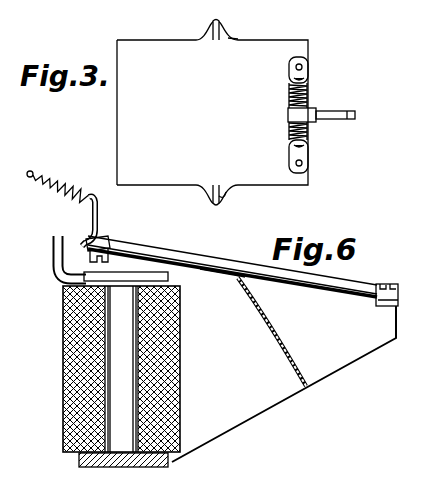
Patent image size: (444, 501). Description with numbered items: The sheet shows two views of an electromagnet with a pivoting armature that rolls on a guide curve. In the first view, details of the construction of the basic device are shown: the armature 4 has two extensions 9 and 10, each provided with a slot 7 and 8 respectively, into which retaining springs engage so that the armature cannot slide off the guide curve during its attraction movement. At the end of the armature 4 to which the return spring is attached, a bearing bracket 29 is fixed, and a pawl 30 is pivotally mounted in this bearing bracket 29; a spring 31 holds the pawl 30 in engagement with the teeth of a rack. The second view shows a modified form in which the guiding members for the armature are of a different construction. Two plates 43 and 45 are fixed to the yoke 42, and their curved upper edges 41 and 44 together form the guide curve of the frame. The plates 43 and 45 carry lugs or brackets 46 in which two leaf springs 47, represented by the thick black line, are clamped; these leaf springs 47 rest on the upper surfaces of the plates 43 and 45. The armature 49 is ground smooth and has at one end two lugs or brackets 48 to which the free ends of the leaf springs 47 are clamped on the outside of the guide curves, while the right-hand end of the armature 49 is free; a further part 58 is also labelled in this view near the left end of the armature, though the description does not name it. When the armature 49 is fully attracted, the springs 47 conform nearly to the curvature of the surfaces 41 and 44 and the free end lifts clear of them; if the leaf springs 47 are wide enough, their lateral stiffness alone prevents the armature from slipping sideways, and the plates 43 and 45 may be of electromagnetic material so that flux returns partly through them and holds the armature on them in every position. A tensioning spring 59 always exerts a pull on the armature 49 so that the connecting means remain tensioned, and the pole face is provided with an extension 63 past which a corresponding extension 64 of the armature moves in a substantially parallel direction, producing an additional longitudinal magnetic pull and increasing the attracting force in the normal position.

In FIG. 3, the armature 4 is at (126, 113).
In FIG. 3, the slot 7 is at (214, 21).
In FIG. 3, the slot 8 is at (223, 205).
In FIG. 3, the extension 9 is at (228, 37).
In FIG. 3, the extension 10 is at (206, 190).
In FIG. 3, the bearing bracket 29 is at (308, 66).
In FIG. 3, the pawl 30 is at (326, 114).
In FIG. 3, the spring 31 is at (308, 139).
In FIG. 6, the curved upper edge 41 is at (203, 273).
In FIG. 6, the yoke 42 is at (167, 462).
In FIG. 6, the plate 43 is at (283, 390).
In FIG. 6, the curved upper edge 44 is at (258, 281).
In FIG. 6, the plate 45 is at (364, 349).
In FIG. 6, the lug or bracket 46 is at (399, 297).
In FIG. 6, the leaf spring 47 is at (176, 259).
In FIG. 6, the lug or bracket 48 is at (104, 240).
In FIG. 6, the armature 49 is at (216, 261).
In FIG. 6, the plate 58 is at (130, 277).
In FIG. 6, the tensioning spring 59 is at (57, 192).
In FIG. 6, the extension 63 is at (54, 260).
In FIG. 6, the extension 64 is at (86, 219).